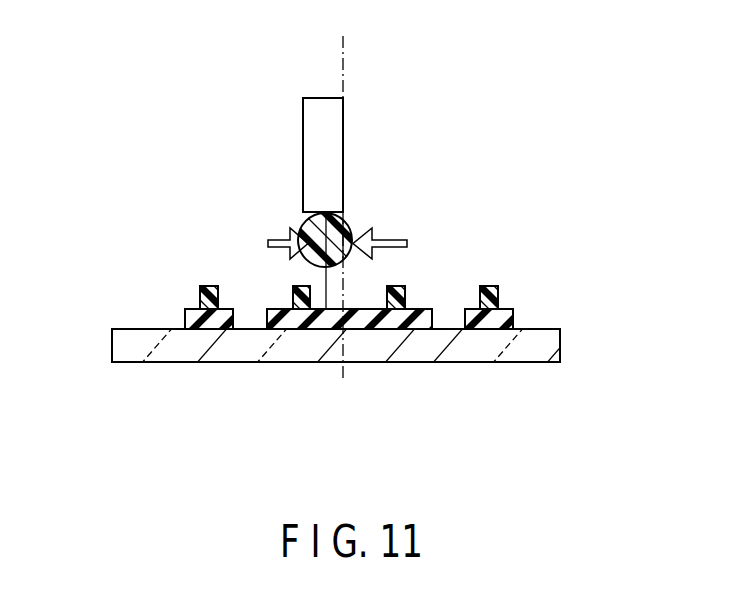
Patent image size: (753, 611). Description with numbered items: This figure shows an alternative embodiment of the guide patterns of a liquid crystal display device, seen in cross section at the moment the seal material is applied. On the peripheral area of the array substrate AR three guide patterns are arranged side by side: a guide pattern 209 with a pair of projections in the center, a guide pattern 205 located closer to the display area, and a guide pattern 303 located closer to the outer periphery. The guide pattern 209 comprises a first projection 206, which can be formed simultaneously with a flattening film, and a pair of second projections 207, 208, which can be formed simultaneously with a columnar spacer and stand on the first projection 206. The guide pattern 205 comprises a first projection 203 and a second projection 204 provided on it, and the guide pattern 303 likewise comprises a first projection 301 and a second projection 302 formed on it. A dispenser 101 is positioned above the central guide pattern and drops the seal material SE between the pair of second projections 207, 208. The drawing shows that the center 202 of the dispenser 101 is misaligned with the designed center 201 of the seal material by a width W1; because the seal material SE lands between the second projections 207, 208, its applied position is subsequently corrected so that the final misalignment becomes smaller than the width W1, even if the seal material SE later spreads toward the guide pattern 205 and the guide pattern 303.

The dispenser 101 is at (333, 140).
The designed center of the seal material 201 is at (345, 61).
The center of the dispenser 202 is at (322, 268).
The first projection 203 is at (187, 318).
The second projection 204 is at (202, 293).
The guide pattern 205 is at (100, 257).
The first projection 206 is at (417, 325).
The second projection 207 is at (395, 312).
The second projection 208 is at (305, 312).
The guide pattern 209 is at (470, 425).
The first projection 301 is at (510, 317).
The second projection 302 is at (500, 293).
The guide pattern 303 is at (593, 257).
The array substrate AR is at (122, 348).
The seal material SE is at (300, 222).
The width W1 is at (339, 229).